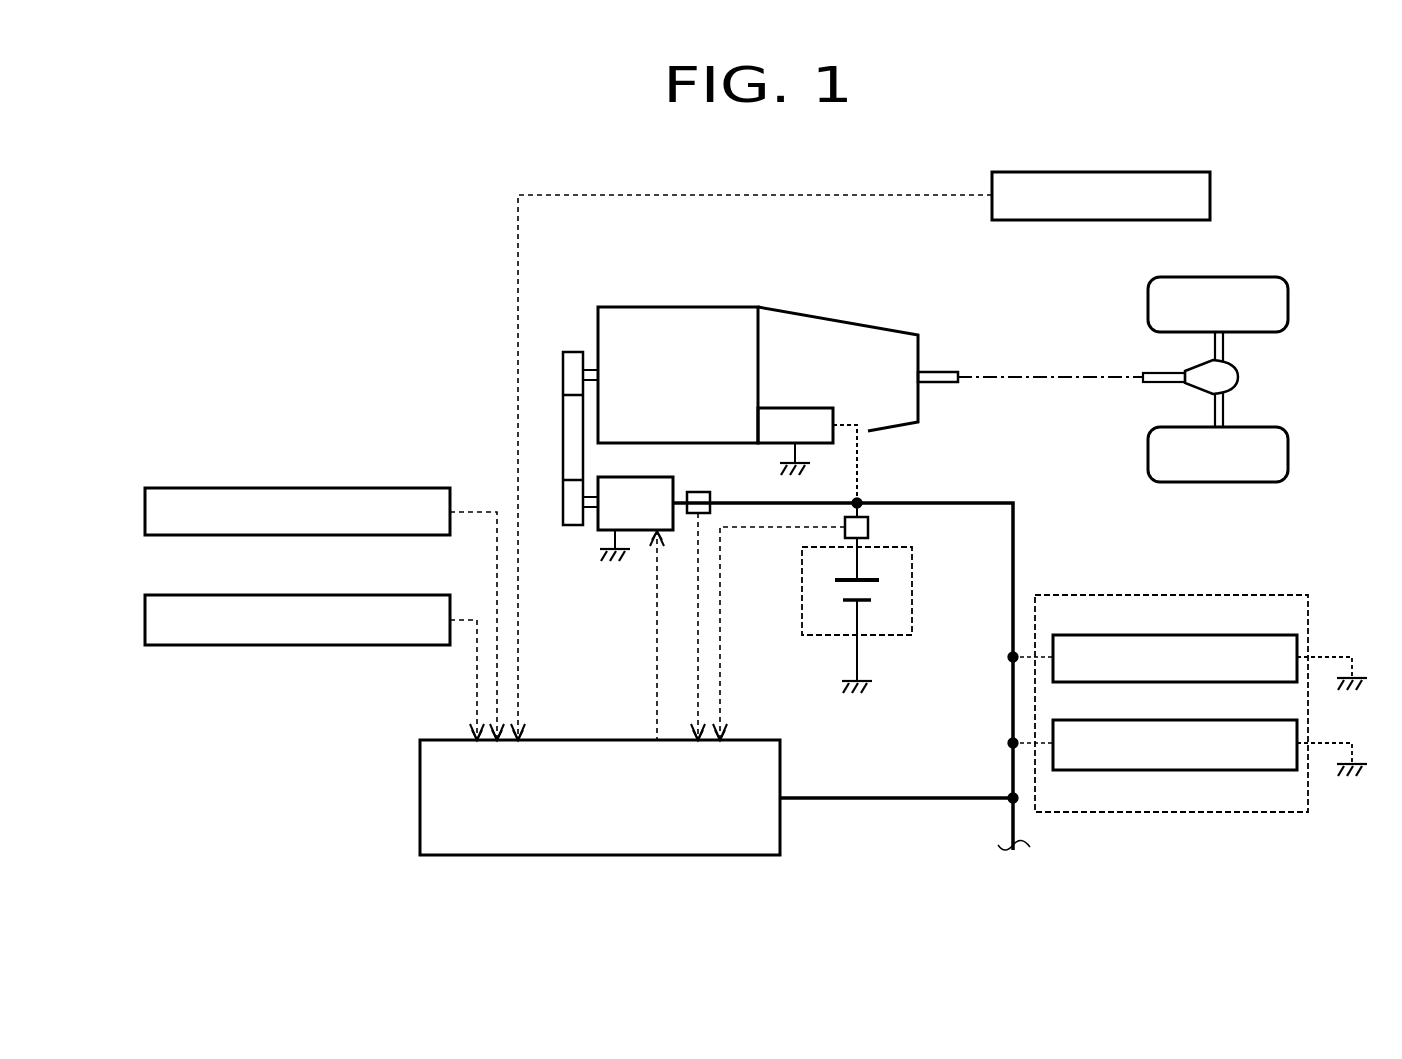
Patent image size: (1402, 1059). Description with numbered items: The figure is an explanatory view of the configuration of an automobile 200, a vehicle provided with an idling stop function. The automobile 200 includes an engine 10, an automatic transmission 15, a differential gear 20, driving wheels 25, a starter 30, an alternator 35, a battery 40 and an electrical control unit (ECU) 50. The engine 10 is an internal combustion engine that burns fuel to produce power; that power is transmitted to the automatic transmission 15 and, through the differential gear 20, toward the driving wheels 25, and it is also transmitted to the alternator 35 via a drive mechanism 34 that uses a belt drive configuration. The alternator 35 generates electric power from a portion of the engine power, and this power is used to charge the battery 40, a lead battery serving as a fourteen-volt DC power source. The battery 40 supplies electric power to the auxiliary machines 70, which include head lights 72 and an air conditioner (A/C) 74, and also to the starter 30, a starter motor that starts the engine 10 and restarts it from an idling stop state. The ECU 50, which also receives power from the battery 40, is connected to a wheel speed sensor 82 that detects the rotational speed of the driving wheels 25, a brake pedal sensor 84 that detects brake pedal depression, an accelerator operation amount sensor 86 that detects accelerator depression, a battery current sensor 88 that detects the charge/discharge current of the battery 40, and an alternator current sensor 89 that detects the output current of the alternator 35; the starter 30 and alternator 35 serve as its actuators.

The automobile 200 is at (1252, 150).
The engine 10 is at (624, 306).
The automatic transmission 15 is at (845, 298).
The differential gear 20 is at (1240, 375).
The driving wheels 25 is at (1290, 302).
The starter 30 is at (788, 407).
The drive mechanism 34 is at (560, 440).
The alternator 35 is at (626, 476).
The battery 40 is at (913, 590).
The electrical control unit (ECU) 50 is at (602, 738).
The auxiliary machines 70 is at (1077, 594).
The head lights 72 is at (1298, 648).
The air conditioner (A/C) 74 is at (1298, 732).
The wheel speed sensor 82 is at (1020, 171).
The brake pedal sensor 84 is at (174, 487).
The accelerator operation amount sensor 86 is at (174, 594).
The battery current sensor 88 is at (869, 524).
The alternator current sensor 89 is at (700, 491).